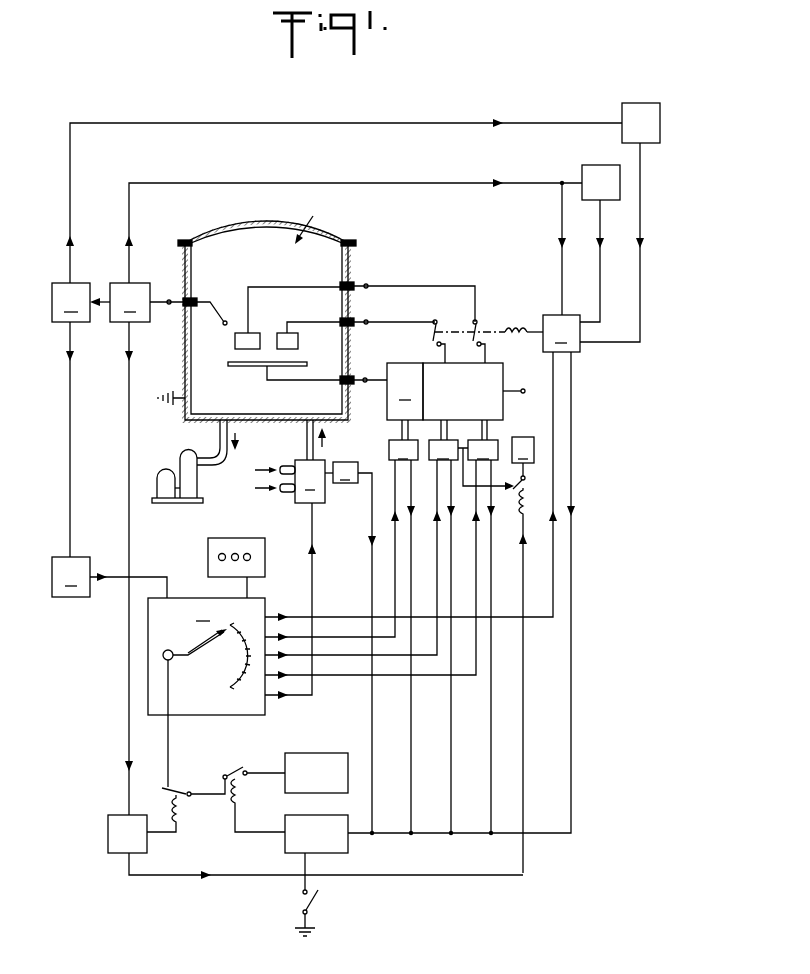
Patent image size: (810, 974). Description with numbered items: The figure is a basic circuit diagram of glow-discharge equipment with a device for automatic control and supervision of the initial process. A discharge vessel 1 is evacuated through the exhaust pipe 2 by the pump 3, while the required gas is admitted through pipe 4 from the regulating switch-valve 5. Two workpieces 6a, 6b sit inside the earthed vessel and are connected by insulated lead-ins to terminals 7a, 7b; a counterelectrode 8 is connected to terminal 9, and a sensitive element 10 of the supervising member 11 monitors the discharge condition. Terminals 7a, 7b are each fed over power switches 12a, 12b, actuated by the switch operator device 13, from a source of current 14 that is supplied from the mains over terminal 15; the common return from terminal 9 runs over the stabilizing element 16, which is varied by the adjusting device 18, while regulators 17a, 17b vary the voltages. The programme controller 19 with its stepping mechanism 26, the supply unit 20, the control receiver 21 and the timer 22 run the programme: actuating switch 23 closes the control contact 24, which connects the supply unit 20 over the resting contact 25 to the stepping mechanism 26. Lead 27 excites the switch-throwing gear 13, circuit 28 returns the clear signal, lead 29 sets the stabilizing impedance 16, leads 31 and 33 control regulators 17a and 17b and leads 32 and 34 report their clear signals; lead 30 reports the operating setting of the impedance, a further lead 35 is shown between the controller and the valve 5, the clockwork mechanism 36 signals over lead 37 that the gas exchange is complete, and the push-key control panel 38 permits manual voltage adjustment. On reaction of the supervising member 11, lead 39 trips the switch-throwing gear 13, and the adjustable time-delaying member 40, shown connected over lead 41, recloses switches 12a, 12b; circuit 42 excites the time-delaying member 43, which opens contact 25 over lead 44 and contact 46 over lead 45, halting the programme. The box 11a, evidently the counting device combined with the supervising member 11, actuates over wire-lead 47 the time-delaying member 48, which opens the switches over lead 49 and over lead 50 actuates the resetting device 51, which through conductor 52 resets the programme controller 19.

The discharge vessel 1 is at (322, 255).
The exhaust pipe 2 is at (220, 434).
The pump 3 is at (197, 491).
The pipe 4 is at (307, 440).
The regulating switch-valve 5 is at (300, 506).
The workpiece 6a is at (235, 341).
The workpiece 6b is at (298, 340).
The terminal 7a is at (366, 284).
The terminal 7b is at (366, 320).
The counterelectrode 8 is at (240, 367).
The terminal 9 is at (365, 383).
The sensitive element 10 is at (229, 317).
The supervising member 11 is at (146, 302).
The measuring amplifier 11a is at (100, 302).
The power switch 12a is at (478, 326).
The power switch 12b is at (438, 325).
The switch operator device 13 is at (507, 333).
The source of current 14 is at (503, 381).
The terminal 15 is at (526, 391).
The stabilizing element 16 is at (408, 363).
The regulator 17a is at (486, 455).
The regulator 17b is at (443, 440).
The adjusting device 18 is at (389, 450).
The programme controller 19 is at (148, 638).
The supply unit 20 is at (316, 752).
The control receiver 21 is at (328, 811).
The timer 22 is at (534, 432).
The switch 23 is at (303, 904).
The control contact 24 is at (236, 766).
The resting contact 25 is at (176, 789).
The stepping mechanism 26 is at (169, 650).
The lead 27 is at (352, 612).
The circuit 28 is at (572, 728).
The lead 29 is at (352, 632).
The lead 30 is at (411, 736).
The lead 31 is at (352, 672).
The lead 32 is at (491, 737).
The lead 33 is at (352, 652).
The lead 34 is at (452, 737).
The control line 35 is at (312, 585).
The clockwork mechanism 36 is at (341, 472).
The lead 37 is at (372, 583).
The push-key control panel 38 is at (265, 556).
The lead 39 is at (129, 222).
The adjustable time-delaying member 40 is at (589, 165).
The line 41 is at (600, 297).
The circuit 42 is at (129, 391).
The time-delaying member 43 is at (107, 816).
The lead 44 is at (160, 842).
The lead 45 is at (244, 874).
The contact 46 is at (526, 480).
The wire-lead 47 is at (70, 222).
The time-delaying member 48 is at (634, 104).
The lead 49 is at (641, 223).
The lead 50 is at (70, 391).
The resetting device 51 is at (71, 577).
The conductor 52 is at (145, 577).